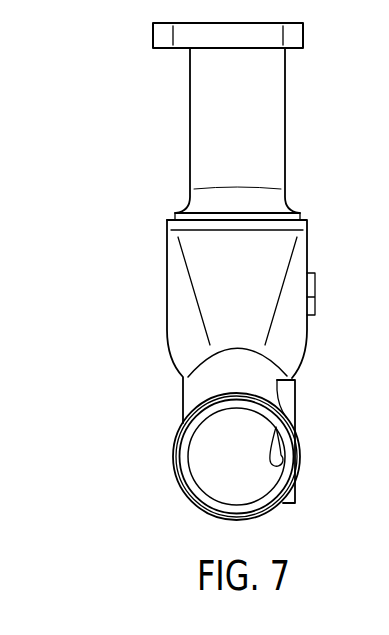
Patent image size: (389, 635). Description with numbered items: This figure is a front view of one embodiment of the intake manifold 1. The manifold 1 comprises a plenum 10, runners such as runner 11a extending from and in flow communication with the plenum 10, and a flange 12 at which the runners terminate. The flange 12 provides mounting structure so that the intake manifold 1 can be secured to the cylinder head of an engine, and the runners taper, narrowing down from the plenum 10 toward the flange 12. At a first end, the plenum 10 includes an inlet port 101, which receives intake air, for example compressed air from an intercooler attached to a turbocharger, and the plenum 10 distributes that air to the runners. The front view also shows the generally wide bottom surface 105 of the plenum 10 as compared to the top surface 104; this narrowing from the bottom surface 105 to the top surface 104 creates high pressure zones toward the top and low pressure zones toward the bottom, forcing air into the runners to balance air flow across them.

The intake manifold 1 is at (70, 163).
The flange 12 is at (292, 38).
The runner 11a is at (270, 110).
The bottom surface 105 is at (298, 213).
The plenum 10 is at (178, 298).
The top surface 104 is at (262, 513).
The inlet port 101 is at (210, 474).